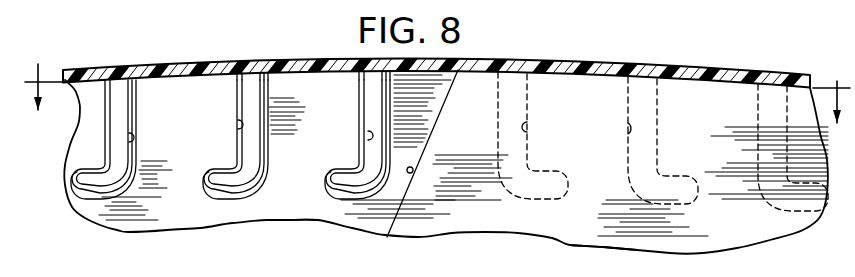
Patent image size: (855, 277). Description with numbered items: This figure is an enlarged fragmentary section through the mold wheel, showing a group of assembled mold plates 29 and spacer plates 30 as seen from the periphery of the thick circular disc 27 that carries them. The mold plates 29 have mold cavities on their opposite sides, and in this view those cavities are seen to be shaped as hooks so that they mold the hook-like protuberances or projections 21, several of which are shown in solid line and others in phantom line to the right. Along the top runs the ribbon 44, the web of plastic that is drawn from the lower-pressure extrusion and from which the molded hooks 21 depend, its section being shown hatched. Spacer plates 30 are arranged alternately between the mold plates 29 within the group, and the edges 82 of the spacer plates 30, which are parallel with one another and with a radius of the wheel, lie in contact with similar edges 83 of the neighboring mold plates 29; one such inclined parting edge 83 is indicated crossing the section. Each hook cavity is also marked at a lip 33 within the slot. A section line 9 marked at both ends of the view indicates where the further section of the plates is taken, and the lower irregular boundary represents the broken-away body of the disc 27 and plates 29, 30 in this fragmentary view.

The section line 9- 9 is at (437, 83).
The ribbon 44 is at (187, 69).
The hook-like protuberances 21 is at (252, 94).
The retaining lip 33 is at (238, 124).
The edges of neighboring mold plates 83 is at (430, 133).
The edges of spacer plates 82 is at (413, 170).
The circular disc 27 is at (199, 236).
The mold plates 29 is at (288, 203).
The spacer plates 30 is at (596, 230).